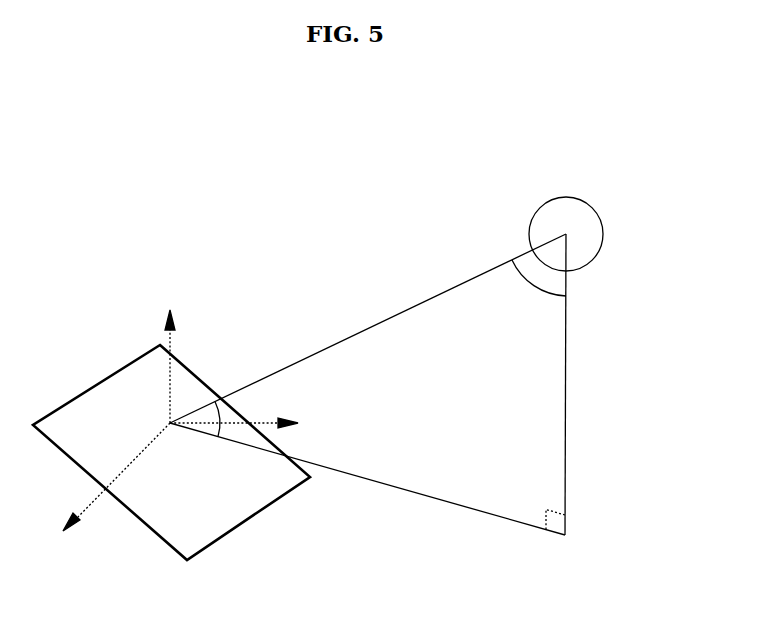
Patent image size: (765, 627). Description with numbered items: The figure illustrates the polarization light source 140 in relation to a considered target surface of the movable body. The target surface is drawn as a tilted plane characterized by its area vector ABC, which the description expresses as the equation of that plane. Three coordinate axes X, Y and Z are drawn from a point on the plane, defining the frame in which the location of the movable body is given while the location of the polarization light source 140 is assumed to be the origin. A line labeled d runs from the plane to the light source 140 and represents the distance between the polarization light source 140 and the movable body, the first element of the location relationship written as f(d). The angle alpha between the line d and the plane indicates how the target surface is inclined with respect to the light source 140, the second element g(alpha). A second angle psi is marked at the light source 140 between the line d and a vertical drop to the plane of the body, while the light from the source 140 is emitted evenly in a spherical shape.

The polarization light source 140 is at (603, 228).
The distance d is at (368, 328).
The inclination angle alpha is at (242, 405).
The angle between distance line and vertical psi is at (539, 288).
The X axis X is at (105, 492).
The Y axis Y is at (246, 424).
The Z axis Z is at (169, 351).
The area vector ABC is at (171, 452).